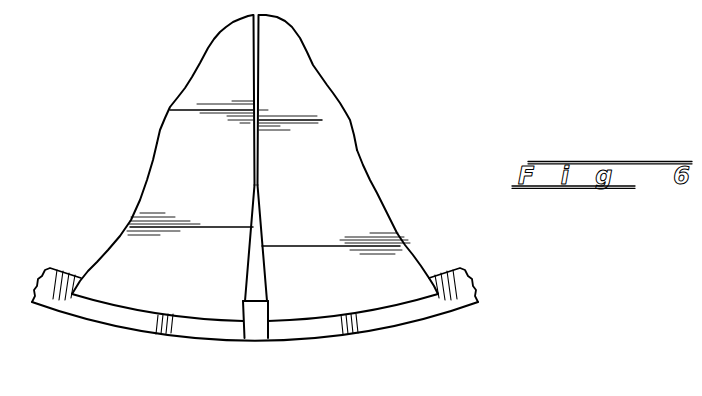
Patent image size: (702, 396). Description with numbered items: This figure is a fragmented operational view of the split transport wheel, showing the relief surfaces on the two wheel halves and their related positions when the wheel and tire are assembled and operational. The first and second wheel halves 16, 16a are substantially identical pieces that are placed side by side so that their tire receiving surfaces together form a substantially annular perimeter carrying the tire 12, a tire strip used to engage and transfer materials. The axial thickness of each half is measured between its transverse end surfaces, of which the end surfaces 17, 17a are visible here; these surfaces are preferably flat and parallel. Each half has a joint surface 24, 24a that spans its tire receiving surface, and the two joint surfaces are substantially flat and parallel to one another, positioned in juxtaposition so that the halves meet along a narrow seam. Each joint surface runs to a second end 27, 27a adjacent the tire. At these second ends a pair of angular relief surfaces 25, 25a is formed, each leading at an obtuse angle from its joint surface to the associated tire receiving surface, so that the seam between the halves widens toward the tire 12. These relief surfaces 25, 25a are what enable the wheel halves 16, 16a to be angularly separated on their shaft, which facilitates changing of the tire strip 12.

The tire 12 is at (447, 313).
The first wheel half 16 is at (305, 90).
The second wheel half 16a is at (222, 64).
The transverse end surface 17 is at (338, 177).
The transverse end surface 17a is at (177, 170).
The joint surface 24 is at (259, 50).
The joint surface 24a is at (253, 33).
The relief surface 25 is at (268, 282).
The relief surface 25a is at (247, 274).
The second end 27 is at (268, 338).
The second end 27a is at (245, 338).